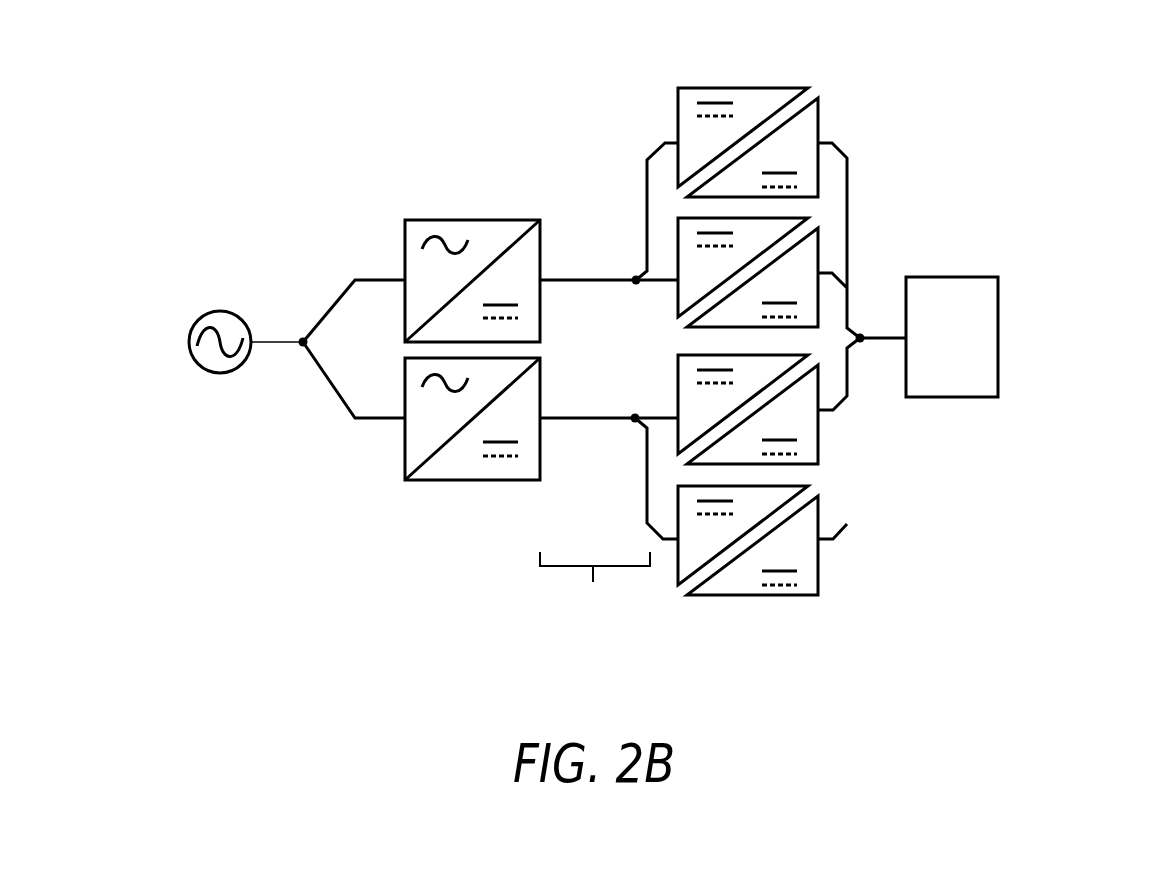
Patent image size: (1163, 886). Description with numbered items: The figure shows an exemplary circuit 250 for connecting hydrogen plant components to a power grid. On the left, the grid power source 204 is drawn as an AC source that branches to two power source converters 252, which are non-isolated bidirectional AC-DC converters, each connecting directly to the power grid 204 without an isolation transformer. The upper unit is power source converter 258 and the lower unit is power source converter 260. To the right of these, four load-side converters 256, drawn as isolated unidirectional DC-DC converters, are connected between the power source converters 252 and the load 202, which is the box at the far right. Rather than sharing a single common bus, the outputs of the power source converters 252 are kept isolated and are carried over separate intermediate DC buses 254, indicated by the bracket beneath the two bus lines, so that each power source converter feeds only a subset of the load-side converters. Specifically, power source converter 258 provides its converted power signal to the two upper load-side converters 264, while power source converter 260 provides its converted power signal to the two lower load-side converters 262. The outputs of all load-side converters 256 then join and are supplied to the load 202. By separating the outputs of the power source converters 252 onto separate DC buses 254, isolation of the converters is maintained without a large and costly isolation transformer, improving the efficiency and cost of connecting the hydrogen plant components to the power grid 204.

The circuit 250 is at (192, 98).
The grid power source 204 is at (200, 374).
The power source converters 252 is at (461, 500).
The power source converter 258 is at (540, 232).
The power source converter 260 is at (540, 455).
The intermediate DC bus 254 is at (584, 654).
The load-side converters 256 is at (744, 630).
The load-side converters 264 is at (893, 202).
The load-side converters 262 is at (908, 478).
The load 202 is at (998, 397).